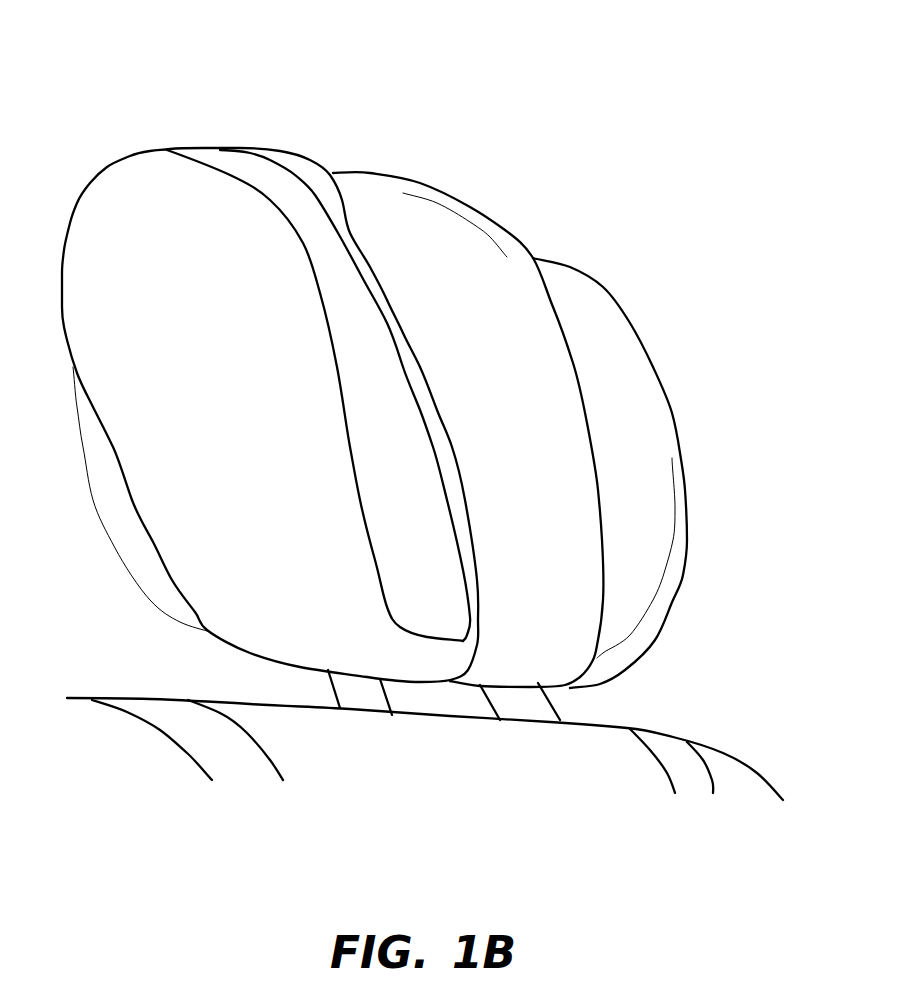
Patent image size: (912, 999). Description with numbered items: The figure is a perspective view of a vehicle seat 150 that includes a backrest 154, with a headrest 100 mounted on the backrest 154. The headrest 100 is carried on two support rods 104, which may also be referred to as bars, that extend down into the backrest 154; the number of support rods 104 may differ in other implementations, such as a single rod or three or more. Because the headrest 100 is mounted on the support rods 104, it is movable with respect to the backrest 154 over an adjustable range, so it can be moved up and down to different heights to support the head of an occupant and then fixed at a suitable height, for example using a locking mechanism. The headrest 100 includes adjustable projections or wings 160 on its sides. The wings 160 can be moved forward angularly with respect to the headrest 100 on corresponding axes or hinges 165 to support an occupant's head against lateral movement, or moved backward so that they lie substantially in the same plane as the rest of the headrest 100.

The headrest 100 is at (487, 293).
The support rod 104 is at (340, 689).
The vehicle seat 150 is at (100, 67).
The backrest 154 is at (607, 740).
The wings 160 is at (372, 442).
The hinges 165 is at (443, 410).